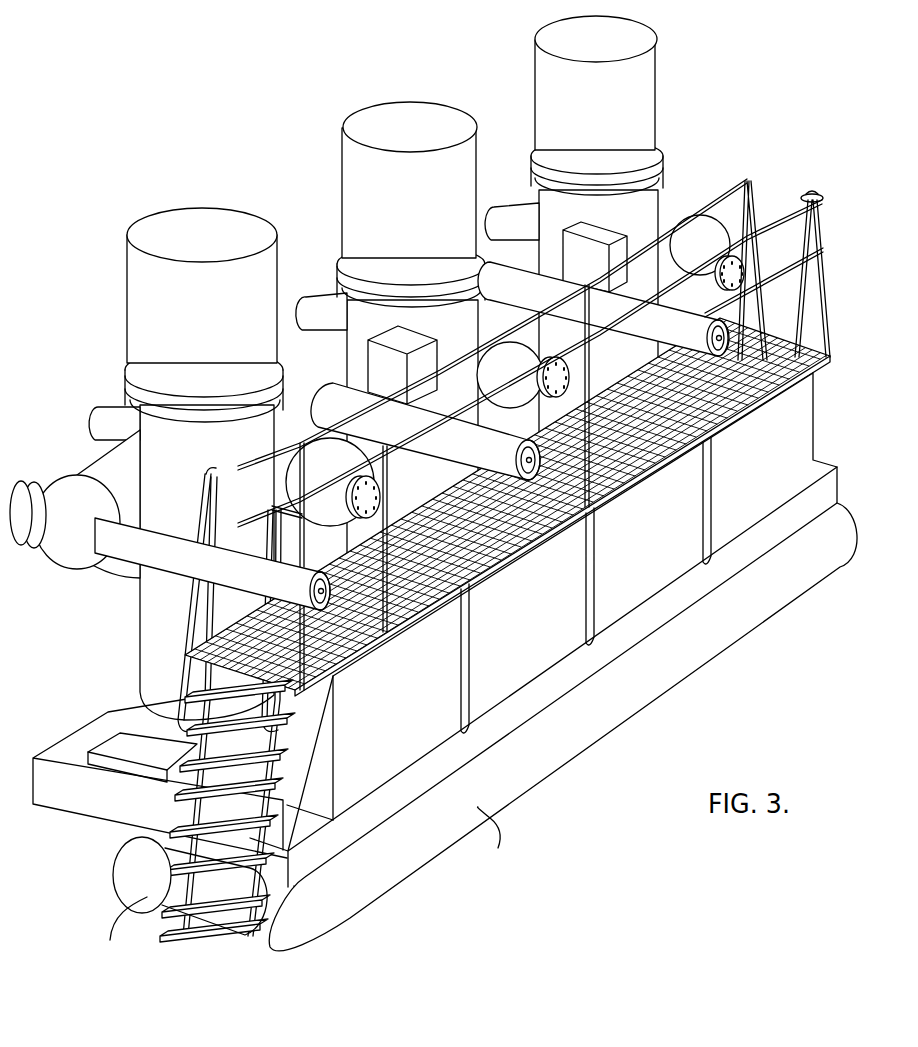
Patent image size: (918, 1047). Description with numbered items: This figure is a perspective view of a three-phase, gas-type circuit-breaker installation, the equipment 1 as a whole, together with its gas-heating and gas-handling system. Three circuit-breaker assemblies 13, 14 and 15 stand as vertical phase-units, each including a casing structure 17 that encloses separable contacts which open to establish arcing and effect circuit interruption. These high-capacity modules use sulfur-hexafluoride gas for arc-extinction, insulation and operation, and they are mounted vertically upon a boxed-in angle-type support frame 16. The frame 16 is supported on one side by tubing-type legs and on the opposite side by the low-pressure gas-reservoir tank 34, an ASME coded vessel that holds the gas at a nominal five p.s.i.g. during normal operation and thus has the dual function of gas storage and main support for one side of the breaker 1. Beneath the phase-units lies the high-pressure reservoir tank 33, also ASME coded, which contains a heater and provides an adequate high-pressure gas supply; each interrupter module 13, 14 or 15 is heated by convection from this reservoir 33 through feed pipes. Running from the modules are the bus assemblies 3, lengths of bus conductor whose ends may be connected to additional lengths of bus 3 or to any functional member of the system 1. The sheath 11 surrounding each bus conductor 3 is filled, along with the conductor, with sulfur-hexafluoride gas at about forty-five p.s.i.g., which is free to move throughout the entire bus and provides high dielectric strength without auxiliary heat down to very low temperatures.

The equipment 1 is at (314, 121).
The bus assembly 3 is at (112, 558).
The sheath 11 is at (420, 418).
The circuit-breaker assembly 13 is at (215, 334).
The circuit-breaker assembly 14 is at (424, 226).
The circuit-breaker assembly 15 is at (612, 121).
The support frame 16 is at (583, 670).
The casing structure 17 is at (660, 200).
The high-pressure reservoir tank 33 is at (113, 882).
The low-pressure gas-reservoir tank 34 is at (347, 922).